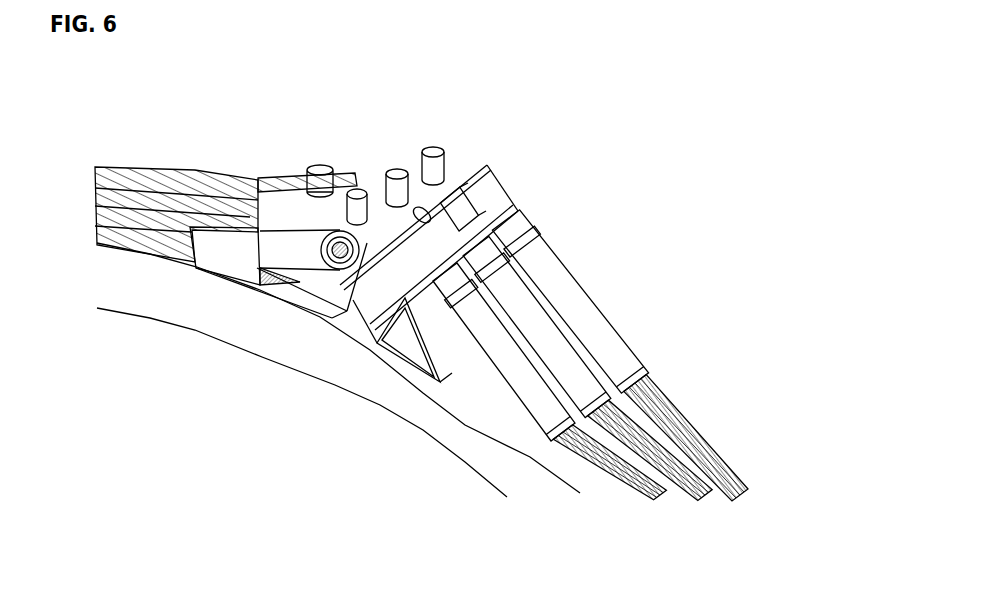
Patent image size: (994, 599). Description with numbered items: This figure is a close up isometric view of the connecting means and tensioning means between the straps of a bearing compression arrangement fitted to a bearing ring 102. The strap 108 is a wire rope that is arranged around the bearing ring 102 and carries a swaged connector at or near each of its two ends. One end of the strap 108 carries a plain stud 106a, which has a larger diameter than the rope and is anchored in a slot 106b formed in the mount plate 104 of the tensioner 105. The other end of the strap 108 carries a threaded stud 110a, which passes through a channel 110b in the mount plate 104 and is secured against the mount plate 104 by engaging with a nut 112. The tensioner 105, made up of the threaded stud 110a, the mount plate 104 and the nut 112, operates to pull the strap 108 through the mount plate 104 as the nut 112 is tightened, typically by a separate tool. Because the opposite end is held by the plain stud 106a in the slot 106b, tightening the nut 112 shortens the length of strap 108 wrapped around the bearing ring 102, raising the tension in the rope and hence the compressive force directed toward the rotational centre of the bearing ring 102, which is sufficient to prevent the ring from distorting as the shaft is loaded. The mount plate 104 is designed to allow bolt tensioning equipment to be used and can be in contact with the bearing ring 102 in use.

The bearing ring 102 is at (462, 440).
The mount plate 104 is at (308, 325).
The tensioner 105 is at (510, 172).
The plain stud 106a is at (298, 273).
The slot 106b is at (306, 168).
The strap 108 is at (183, 166).
The threaded stud 110a is at (600, 302).
The channel 110b is at (491, 206).
The nut 112 is at (458, 159).